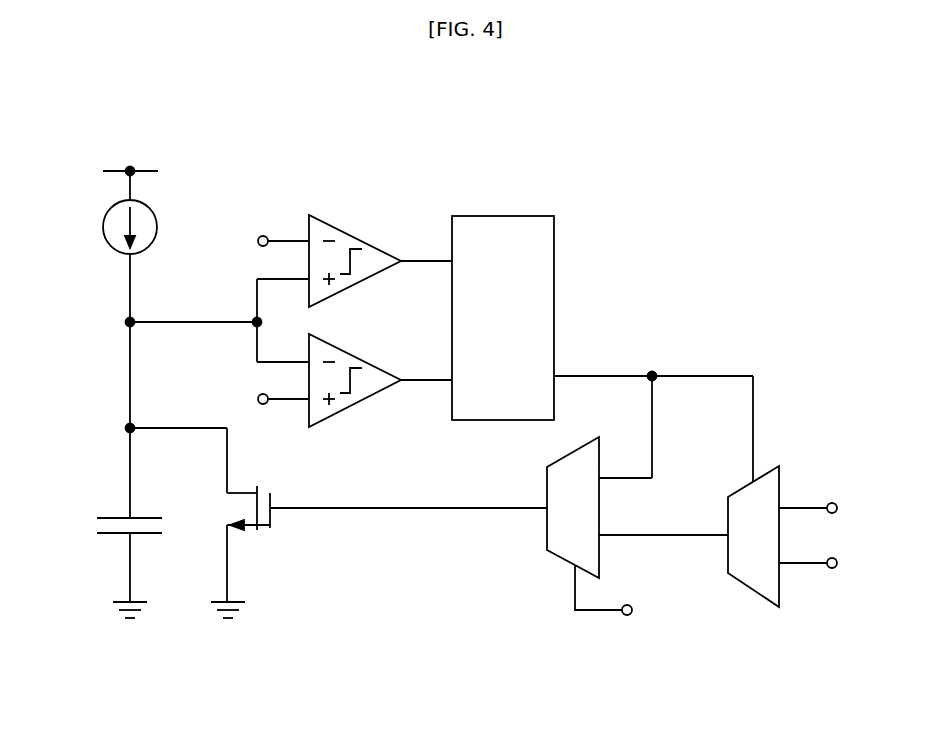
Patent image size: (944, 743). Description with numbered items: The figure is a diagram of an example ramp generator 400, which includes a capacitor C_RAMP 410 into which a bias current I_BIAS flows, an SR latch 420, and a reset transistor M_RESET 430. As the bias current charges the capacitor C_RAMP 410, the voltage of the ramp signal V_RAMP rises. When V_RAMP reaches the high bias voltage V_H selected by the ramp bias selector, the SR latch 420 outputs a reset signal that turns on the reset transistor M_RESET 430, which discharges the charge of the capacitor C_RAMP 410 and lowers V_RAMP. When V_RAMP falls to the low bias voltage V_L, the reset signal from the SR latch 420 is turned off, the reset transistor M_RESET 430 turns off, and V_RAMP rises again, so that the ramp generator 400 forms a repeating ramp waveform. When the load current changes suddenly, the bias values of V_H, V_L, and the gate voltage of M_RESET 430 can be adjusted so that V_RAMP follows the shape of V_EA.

The ramp generator 400 is at (462, 348).
The capacitor C_RAMP 410 is at (148, 568).
The SR latch 420 is at (503, 318).
The reset transistor M_RESET 430 is at (379, 552).